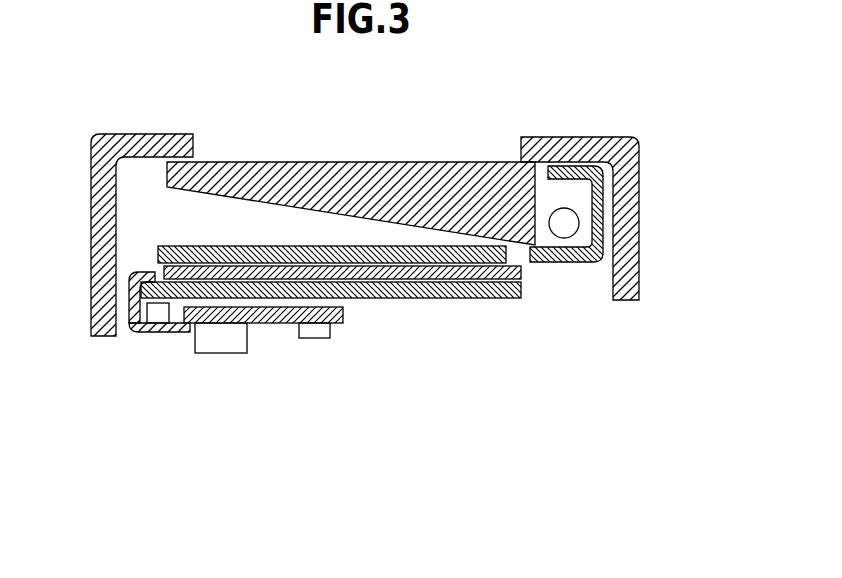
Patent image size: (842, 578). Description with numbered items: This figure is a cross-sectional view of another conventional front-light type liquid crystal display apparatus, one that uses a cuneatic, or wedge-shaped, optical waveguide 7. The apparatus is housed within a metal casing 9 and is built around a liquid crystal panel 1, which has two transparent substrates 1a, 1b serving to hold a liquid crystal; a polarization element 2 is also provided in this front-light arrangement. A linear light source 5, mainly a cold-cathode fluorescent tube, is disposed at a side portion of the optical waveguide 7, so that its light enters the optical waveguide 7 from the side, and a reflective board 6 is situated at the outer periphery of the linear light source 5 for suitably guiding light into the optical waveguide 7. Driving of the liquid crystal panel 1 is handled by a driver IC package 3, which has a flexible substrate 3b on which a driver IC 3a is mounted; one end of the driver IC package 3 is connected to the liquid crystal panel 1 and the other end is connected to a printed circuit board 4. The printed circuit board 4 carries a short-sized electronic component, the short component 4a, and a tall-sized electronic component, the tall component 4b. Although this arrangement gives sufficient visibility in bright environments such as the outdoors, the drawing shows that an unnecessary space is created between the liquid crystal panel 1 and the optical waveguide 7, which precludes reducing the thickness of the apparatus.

The liquid crystal panel 1 is at (384, 312).
The transparent substrate 1a is at (521, 278).
The transparent substrate 1b is at (521, 296).
The polarization element 2 is at (272, 250).
The driver IC package 3 is at (113, 308).
The driver IC 3a is at (157, 315).
The flexible substrate 3b is at (130, 335).
The printed circuit board 4 is at (362, 318).
The short component 4a is at (315, 338).
The tall component 4b is at (219, 345).
The linear light source 5 is at (570, 221).
The reflective board 6 is at (590, 254).
The optical waveguide 7 is at (438, 180).
The metal casing 9 is at (91, 160).